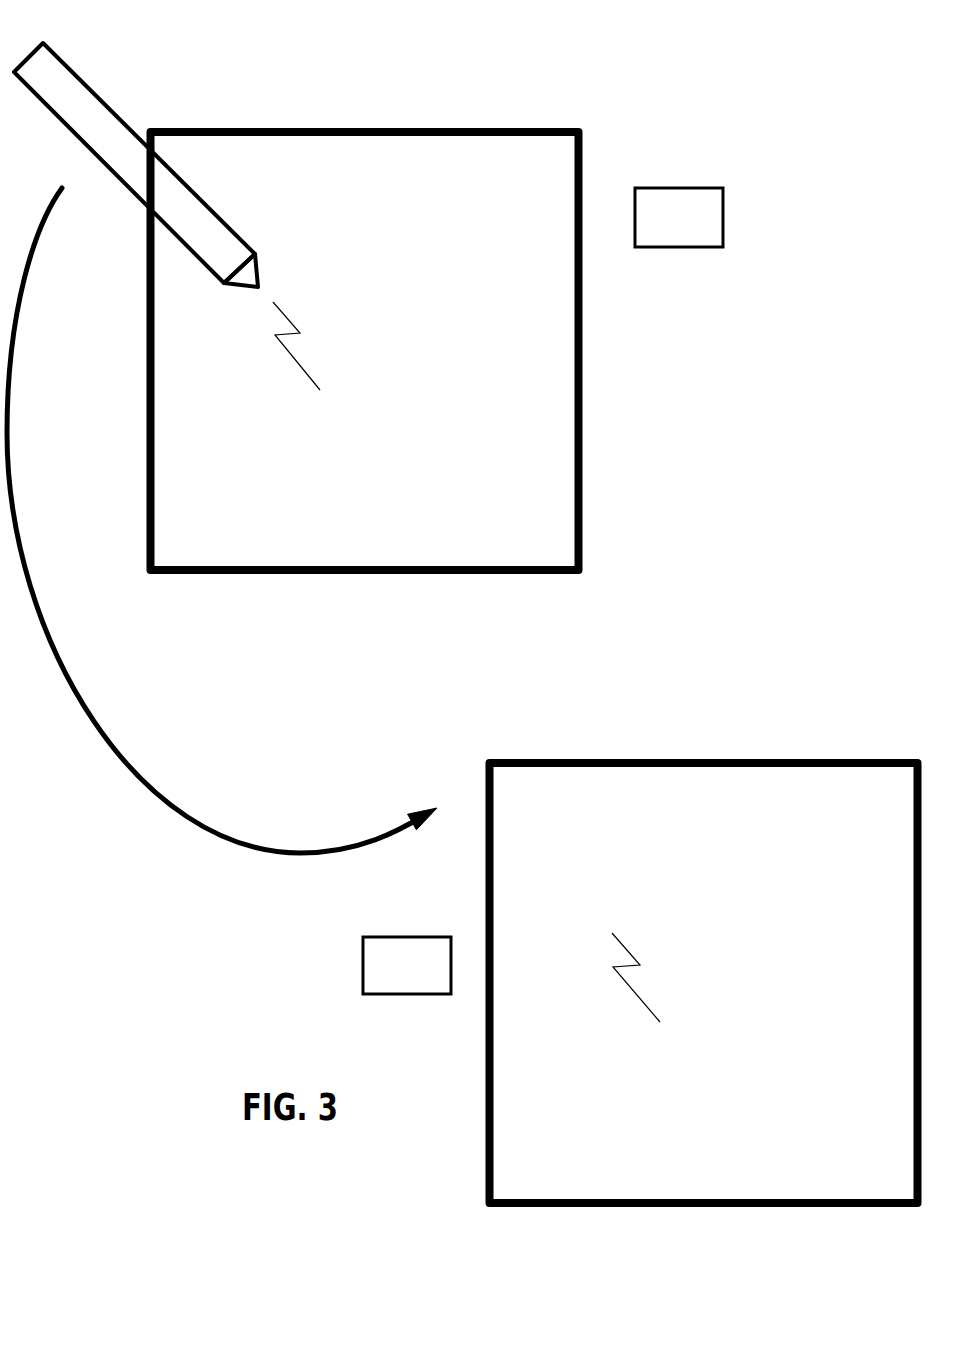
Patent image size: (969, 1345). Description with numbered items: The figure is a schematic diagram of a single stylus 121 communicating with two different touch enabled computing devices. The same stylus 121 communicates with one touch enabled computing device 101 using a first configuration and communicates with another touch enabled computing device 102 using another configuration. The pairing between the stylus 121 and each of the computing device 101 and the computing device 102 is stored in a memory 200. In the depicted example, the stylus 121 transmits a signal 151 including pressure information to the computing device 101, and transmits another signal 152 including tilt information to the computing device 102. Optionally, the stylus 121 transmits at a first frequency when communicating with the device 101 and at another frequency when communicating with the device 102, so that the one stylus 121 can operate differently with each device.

The touch enabled computing device 101 is at (329, 96).
The touch enabled computing device 102 is at (669, 730).
The stylus 121 is at (95, 92).
The signal 151 is at (303, 370).
The signal 152 is at (642, 1002).
The memory 200 is at (723, 203).